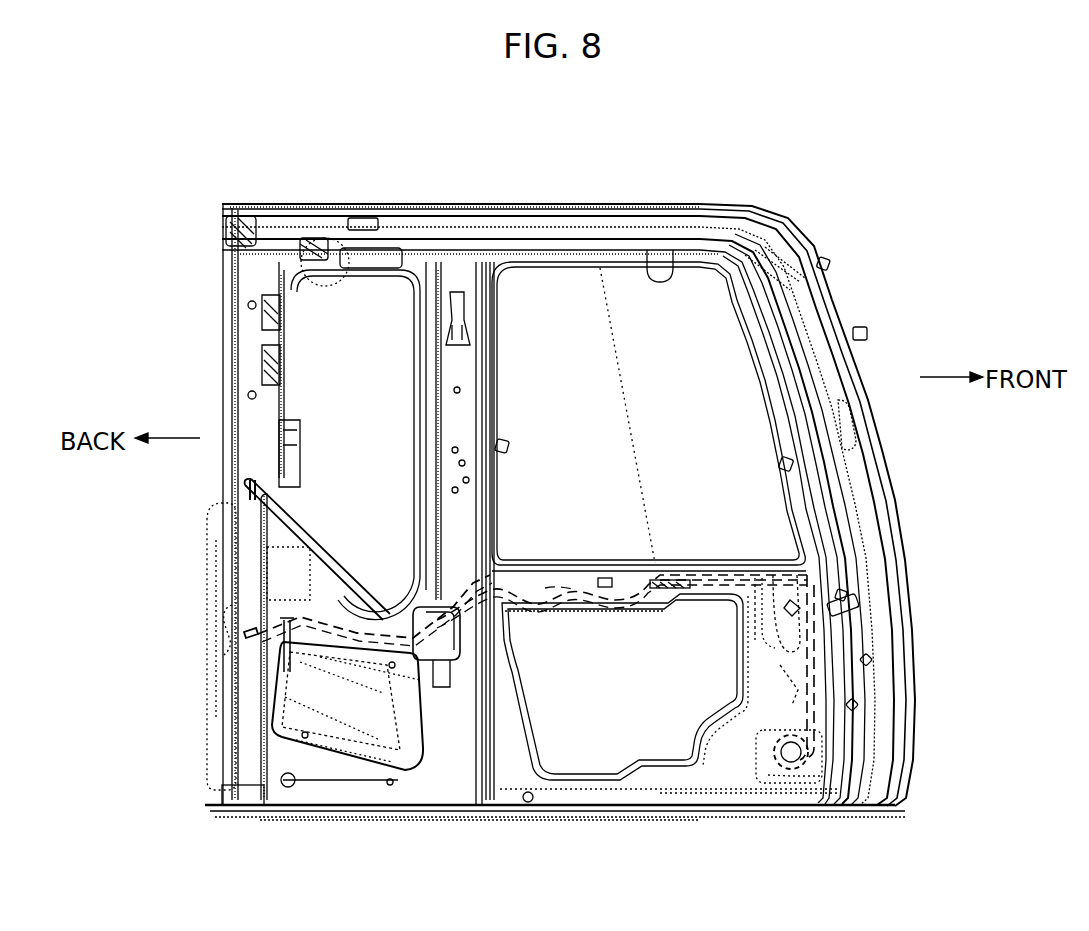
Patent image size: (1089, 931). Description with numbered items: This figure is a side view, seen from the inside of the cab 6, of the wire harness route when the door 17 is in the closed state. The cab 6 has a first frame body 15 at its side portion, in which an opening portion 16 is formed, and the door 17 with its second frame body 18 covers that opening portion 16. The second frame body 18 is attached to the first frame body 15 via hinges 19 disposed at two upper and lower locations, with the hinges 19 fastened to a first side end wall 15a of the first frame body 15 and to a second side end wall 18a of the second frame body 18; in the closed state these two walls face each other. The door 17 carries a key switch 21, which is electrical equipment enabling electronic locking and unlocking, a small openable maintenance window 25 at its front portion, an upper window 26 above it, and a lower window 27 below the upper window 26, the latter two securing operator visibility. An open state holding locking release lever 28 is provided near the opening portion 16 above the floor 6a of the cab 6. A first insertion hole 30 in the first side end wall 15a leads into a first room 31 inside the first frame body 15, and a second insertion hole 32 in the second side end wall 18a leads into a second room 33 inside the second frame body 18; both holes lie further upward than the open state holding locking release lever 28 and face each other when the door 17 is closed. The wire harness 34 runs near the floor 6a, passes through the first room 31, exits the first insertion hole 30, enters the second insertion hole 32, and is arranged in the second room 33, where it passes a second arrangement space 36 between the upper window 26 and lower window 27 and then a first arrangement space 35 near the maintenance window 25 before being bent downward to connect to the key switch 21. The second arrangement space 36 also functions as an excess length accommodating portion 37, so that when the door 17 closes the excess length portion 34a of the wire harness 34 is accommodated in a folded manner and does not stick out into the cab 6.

The cab 6 is at (880, 198).
The floor 6a is at (452, 796).
The first frame body 15 is at (457, 278).
The first side end wall 15a is at (485, 388).
The opening portion 16 is at (684, 262).
The door 17 is at (557, 242).
The second frame body 18 is at (623, 250).
The second side end wall 18a is at (470, 403).
The hinges 19 is at (490, 344).
The key switch 21 is at (771, 773).
The maintenance window 25 is at (788, 623).
The upper window 26 is at (732, 350).
The lower window 27 is at (606, 746).
The open state holding locking release lever 28 is at (480, 658).
The first insertion hole 30 is at (368, 575).
The first room 31 is at (447, 470).
The second insertion hole 32 is at (487, 582).
The second room 33 is at (729, 616).
The wire harness 34 is at (729, 630).
The excess length portion 34a is at (566, 550).
The first arrangement space 35 is at (812, 578).
The second arrangement space 36 is at (705, 572).
The excess length accommodating portion 37 is at (589, 594).